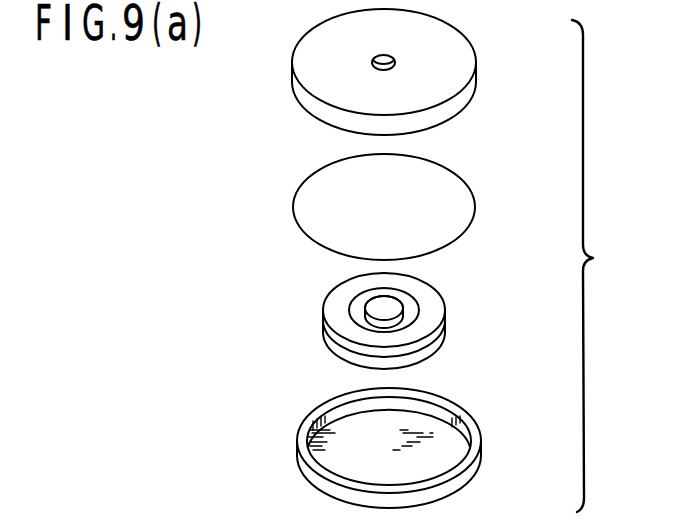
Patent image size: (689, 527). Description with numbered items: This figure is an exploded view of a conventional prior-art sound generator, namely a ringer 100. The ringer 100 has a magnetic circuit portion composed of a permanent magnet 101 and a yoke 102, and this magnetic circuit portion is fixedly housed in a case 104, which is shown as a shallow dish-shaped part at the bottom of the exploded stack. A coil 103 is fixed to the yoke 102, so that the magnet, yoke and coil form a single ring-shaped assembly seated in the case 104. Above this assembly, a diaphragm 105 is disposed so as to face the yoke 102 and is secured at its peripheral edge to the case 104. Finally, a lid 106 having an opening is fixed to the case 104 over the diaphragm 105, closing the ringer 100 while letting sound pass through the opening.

The ringer 100 is at (609, 266).
The permanent magnet 101 is at (433, 303).
The yoke 102 is at (373, 308).
The coil 103 is at (412, 323).
The case 104 is at (480, 462).
The diaphragm 105 is at (443, 192).
The lid 106 is at (442, 62).